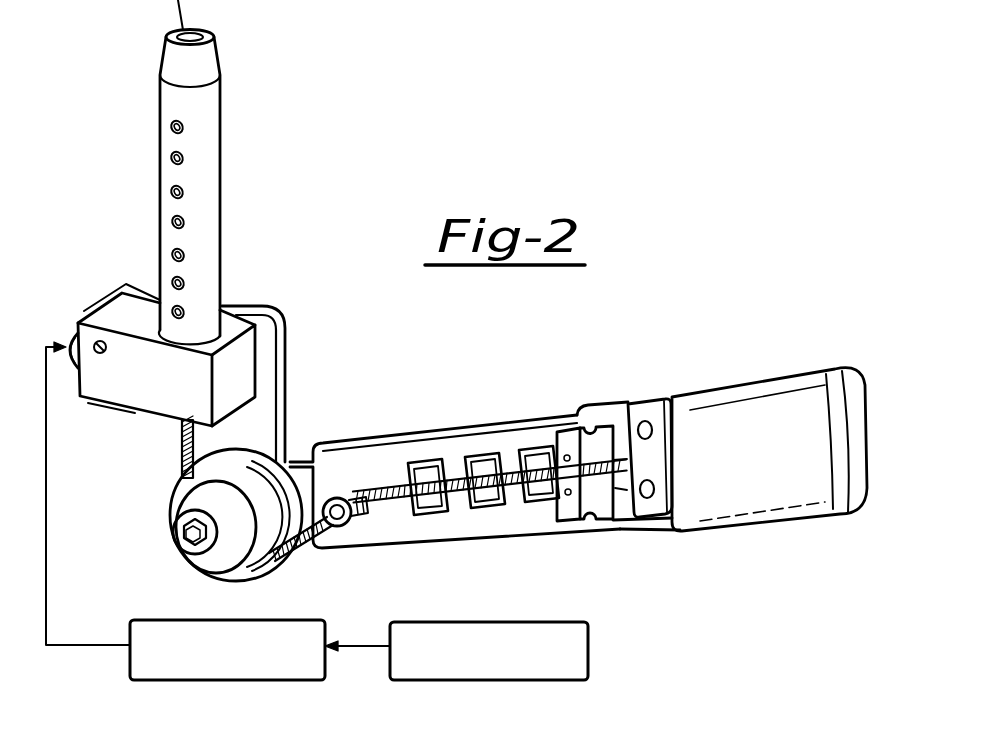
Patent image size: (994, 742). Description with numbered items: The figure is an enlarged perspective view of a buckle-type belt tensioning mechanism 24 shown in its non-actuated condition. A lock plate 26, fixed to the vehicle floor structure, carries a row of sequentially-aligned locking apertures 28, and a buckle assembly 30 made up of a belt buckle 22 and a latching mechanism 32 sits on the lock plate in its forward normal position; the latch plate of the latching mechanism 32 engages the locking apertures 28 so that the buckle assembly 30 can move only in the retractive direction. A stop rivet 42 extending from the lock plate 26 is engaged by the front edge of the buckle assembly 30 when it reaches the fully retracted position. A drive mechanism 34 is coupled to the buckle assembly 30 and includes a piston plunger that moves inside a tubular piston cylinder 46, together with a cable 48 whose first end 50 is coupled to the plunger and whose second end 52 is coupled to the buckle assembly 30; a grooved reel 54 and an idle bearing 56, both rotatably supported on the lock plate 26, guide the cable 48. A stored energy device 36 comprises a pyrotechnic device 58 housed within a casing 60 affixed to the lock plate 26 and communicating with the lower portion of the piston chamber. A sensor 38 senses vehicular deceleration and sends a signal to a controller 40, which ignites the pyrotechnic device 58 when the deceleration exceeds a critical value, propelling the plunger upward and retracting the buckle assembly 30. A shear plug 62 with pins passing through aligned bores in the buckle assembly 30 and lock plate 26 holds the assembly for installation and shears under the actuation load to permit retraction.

The belt buckle 22 is at (757, 397).
The belt tensioning mechanism 24 is at (363, 171).
The lock plate 26 is at (383, 452).
The locking apertures 28 is at (490, 508).
The buckle assembly 30 is at (647, 394).
The latching mechanism 32 is at (632, 520).
The drive mechanism 34 is at (171, 496).
The stored energy device 36 is at (119, 262).
The sensor 38 is at (578, 661).
The controller 40 is at (325, 660).
The stop rivet 42 is at (383, 488).
The tubular piston cylinder 46 is at (213, 163).
The cable 48 is at (308, 538).
The first end 50 is at (180, 436).
The second end 52 is at (615, 447).
The grooved reel 54 is at (283, 455).
The idle bearing 56 is at (343, 533).
The pyrotechnic device 58 is at (74, 333).
The casing 60 is at (238, 365).
The shear plug 62 is at (576, 440).